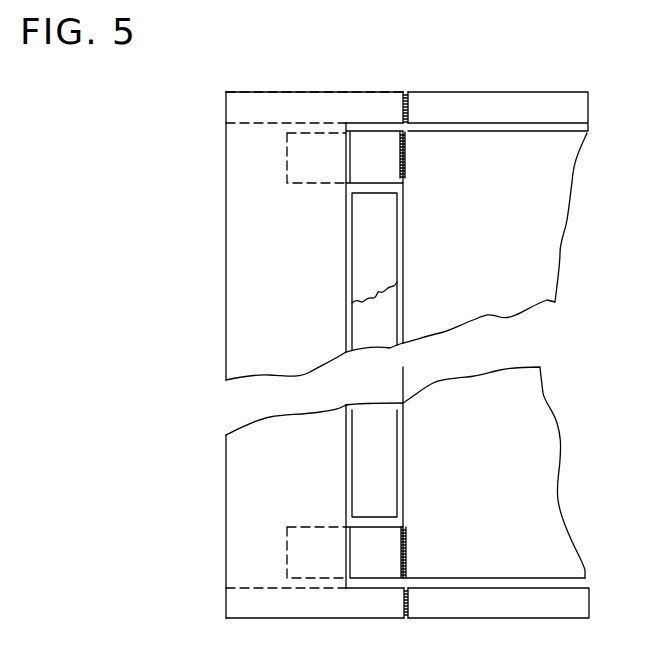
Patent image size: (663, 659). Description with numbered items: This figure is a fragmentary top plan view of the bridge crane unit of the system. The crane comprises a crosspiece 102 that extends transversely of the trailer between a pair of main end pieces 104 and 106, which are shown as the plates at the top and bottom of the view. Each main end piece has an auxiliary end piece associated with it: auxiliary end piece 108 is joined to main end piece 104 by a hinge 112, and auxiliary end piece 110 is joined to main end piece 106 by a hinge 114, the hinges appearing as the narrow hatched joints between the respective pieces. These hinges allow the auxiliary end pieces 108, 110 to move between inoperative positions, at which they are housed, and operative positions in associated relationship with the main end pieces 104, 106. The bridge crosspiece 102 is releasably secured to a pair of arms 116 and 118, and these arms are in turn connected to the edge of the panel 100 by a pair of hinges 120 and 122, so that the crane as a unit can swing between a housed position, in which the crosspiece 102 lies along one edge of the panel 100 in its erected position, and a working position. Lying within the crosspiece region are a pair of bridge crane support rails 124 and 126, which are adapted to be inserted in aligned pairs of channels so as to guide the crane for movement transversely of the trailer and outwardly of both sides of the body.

The panel 100 is at (538, 438).
The crosspiece 102 is at (230, 223).
The main end piece 104 is at (297, 105).
The main end piece 106 is at (240, 605).
The auxiliary end piece 108 is at (508, 92).
The auxiliary end piece 110 is at (575, 603).
The hinge 112 is at (408, 107).
The hinge 114 is at (408, 603).
The arm 116 is at (405, 150).
The arm 118 is at (407, 535).
The hinge 120 is at (405, 173).
The hinge 122 is at (407, 560).
The bridge crane support rail 124 is at (383, 242).
The bridge crane support rail 126 is at (383, 318).